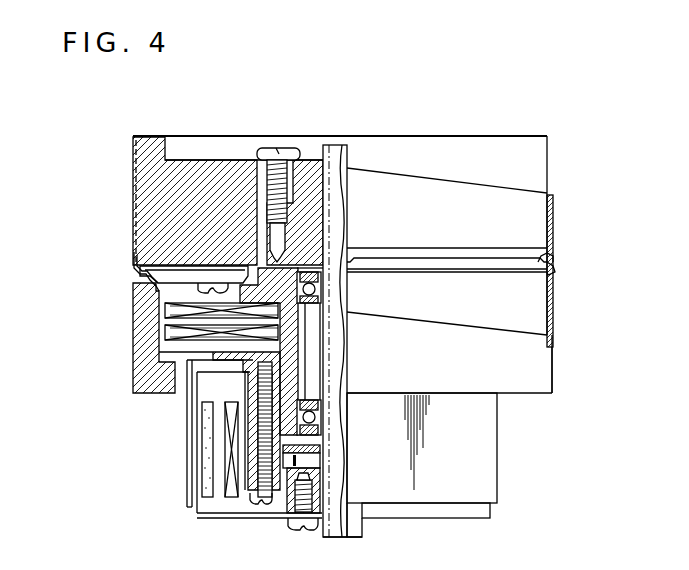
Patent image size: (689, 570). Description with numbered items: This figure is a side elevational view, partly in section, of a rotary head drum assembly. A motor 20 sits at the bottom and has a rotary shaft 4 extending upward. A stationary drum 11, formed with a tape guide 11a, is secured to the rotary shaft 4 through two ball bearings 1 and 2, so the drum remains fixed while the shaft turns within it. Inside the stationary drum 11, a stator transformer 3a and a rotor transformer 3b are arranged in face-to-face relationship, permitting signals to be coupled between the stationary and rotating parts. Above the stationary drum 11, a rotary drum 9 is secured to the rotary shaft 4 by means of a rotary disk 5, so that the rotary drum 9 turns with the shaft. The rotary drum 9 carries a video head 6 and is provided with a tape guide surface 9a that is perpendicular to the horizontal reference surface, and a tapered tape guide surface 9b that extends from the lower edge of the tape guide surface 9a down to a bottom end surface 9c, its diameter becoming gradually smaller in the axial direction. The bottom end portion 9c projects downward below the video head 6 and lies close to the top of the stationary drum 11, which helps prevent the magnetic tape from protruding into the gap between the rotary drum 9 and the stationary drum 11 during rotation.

The ball bearing 1 is at (320, 300).
The ball bearing 2 is at (320, 430).
The stator transformer 3a is at (170, 332).
The rotor transformer 3b is at (167, 313).
The rotary shaft 4 is at (333, 150).
The rotary disk 5 is at (307, 210).
The video head 6 is at (185, 266).
The rotary drum 9 is at (150, 142).
The tape guide surface 9a is at (535, 212).
The tapered tape guide surface 9b is at (543, 253).
The bottom end surface 9c is at (503, 273).
The stationary drum 11 is at (130, 380).
The tape guide 11a is at (452, 318).
The motor 20 is at (493, 487).